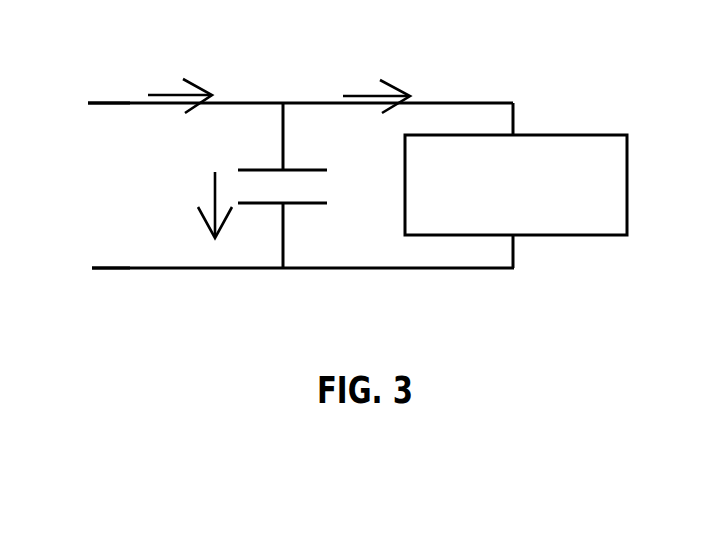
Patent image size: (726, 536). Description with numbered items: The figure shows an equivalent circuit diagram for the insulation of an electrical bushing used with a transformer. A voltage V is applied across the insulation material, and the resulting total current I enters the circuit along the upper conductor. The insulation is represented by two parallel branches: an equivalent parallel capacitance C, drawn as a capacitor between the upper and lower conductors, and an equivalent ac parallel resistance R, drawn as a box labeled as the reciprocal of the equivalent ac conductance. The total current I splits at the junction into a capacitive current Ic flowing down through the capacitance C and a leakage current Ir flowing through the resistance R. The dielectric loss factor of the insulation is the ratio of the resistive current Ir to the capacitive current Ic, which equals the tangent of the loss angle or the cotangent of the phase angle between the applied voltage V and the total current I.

The voltage applied across the insulation V is at (92, 185).
The total current I is at (165, 84).
The leakage current Ir is at (405, 84).
The capacitive current Ic is at (219, 172).
The equivalent parallel capacitance C is at (306, 185).
The equivalent ac parallel resistance R is at (516, 185).